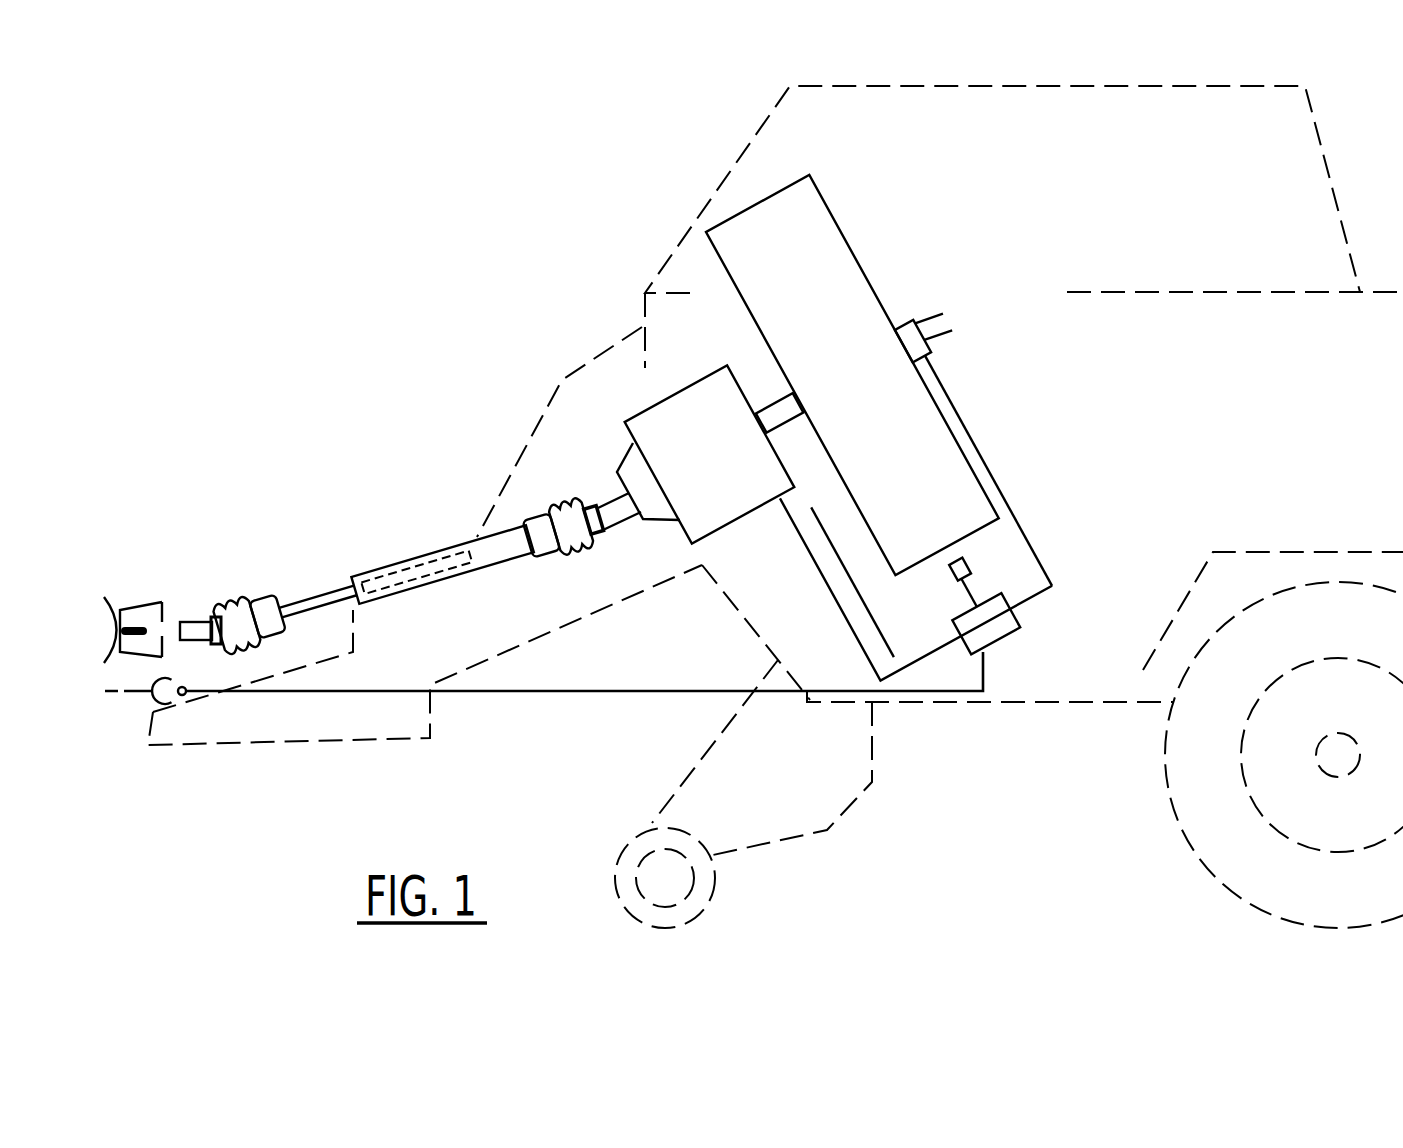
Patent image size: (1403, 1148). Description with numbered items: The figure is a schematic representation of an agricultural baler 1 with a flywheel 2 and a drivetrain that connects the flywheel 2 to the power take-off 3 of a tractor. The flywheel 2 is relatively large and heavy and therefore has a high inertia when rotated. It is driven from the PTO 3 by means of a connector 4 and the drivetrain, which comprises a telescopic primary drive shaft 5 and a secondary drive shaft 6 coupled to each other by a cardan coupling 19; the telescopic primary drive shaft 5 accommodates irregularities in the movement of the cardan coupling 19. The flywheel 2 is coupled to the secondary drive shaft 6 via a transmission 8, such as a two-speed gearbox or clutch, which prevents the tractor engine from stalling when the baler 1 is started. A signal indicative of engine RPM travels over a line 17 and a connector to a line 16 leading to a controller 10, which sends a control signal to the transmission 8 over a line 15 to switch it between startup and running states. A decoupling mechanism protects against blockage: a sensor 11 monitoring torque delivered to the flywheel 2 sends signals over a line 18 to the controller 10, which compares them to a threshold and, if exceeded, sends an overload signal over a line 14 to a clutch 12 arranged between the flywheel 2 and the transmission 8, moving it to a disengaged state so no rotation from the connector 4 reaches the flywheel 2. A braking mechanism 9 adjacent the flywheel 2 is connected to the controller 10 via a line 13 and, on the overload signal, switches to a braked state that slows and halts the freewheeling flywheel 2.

The agricultural baler 1 is at (658, 117).
The flywheel 2 is at (947, 470).
The power take-off (PTO) 3 is at (140, 607).
The connector 4 is at (202, 622).
The primary drive shaft 5 is at (395, 565).
The secondary drive shaft 6 is at (607, 503).
The transmission 8 is at (732, 500).
The braking mechanism 9 is at (906, 330).
The controller 10 is at (1003, 623).
The sensor 11 is at (950, 570).
The clutch 12 is at (772, 402).
The line 13 is at (1017, 525).
The line 14 is at (812, 506).
The line 15 is at (858, 637).
The line 16 is at (553, 693).
The line 17 is at (117, 693).
The line 18 is at (973, 593).
The cardan coupling 19 is at (560, 518).